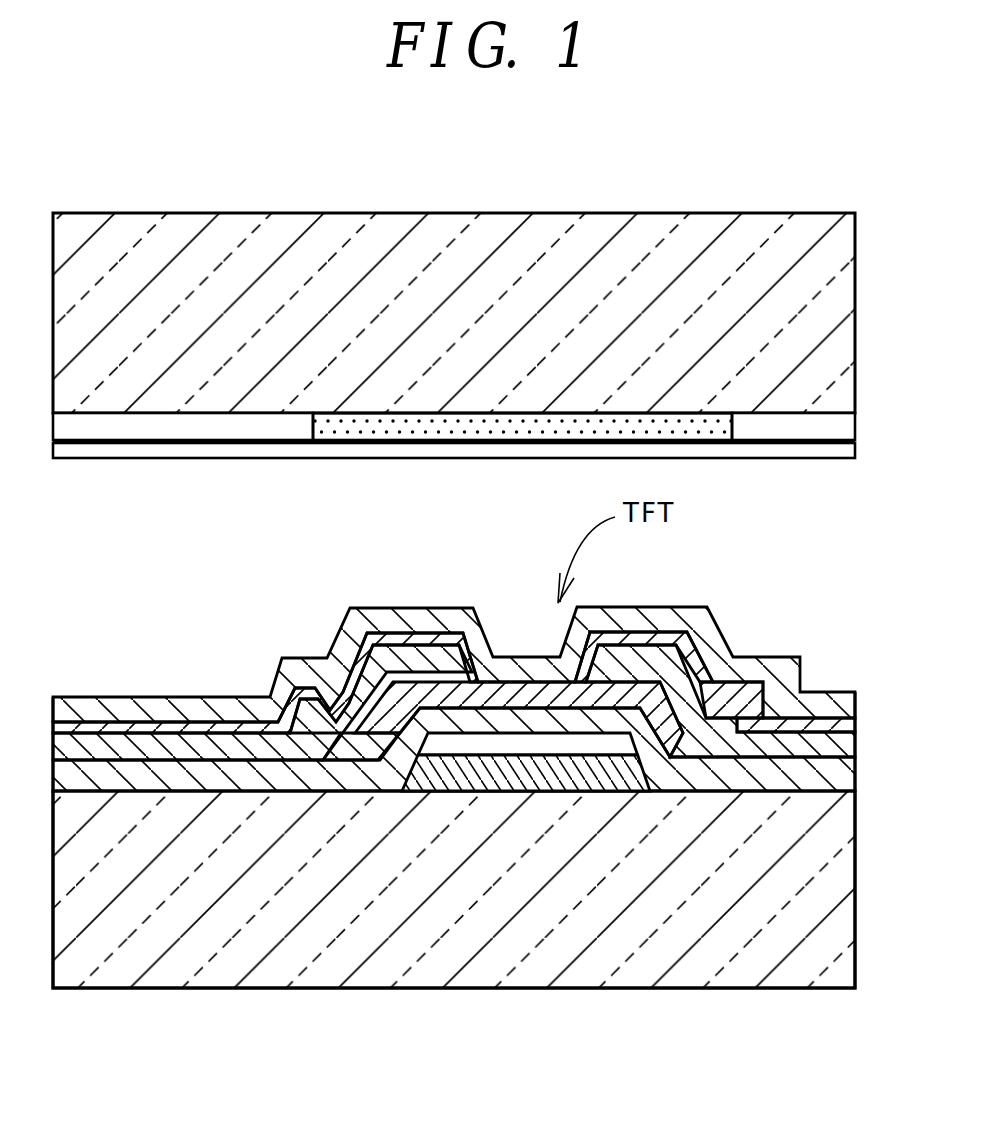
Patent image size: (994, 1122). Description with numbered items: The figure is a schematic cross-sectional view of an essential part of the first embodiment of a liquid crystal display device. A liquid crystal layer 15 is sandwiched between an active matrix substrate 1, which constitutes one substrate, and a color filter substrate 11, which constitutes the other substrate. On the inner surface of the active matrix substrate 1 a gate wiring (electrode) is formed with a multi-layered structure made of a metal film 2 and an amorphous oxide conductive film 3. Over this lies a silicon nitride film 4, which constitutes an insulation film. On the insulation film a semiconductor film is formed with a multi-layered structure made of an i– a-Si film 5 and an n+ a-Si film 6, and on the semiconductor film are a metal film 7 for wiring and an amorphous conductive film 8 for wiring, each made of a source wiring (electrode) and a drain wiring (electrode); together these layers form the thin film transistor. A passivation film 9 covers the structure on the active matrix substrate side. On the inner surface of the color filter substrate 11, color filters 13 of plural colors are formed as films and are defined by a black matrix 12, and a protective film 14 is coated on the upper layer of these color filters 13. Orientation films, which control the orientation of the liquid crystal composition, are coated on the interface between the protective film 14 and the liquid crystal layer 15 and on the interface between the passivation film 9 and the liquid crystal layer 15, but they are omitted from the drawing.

The active matrix substrate 1 is at (202, 958).
The metal film 2 is at (500, 775).
The amorphous oxide conductive film 3 is at (577, 743).
The silicon nitride film 4 is at (810, 770).
The i– a-Si film 5 is at (705, 745).
The n+ a-Si film 6 is at (718, 724).
The metal film for wiring 7 is at (436, 648).
The amorphous conductive film for wiring 8 is at (390, 640).
The passivation film 9 is at (453, 612).
The color filter substrate 11 is at (708, 226).
The black matrix 12 is at (522, 428).
The color filters 13 is at (208, 427).
The protective film 14 is at (148, 452).
The liquid crystal layer 15 is at (766, 556).